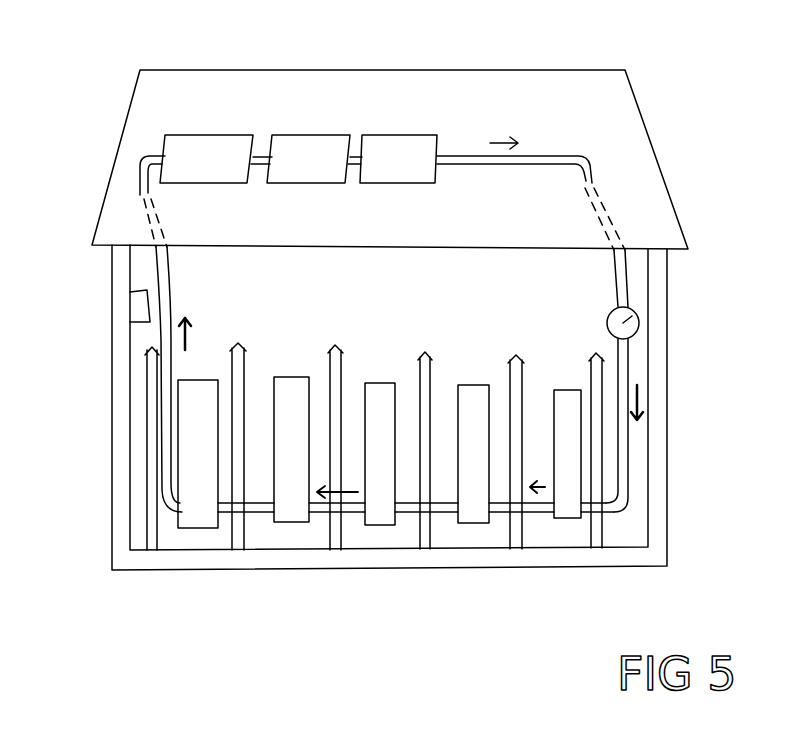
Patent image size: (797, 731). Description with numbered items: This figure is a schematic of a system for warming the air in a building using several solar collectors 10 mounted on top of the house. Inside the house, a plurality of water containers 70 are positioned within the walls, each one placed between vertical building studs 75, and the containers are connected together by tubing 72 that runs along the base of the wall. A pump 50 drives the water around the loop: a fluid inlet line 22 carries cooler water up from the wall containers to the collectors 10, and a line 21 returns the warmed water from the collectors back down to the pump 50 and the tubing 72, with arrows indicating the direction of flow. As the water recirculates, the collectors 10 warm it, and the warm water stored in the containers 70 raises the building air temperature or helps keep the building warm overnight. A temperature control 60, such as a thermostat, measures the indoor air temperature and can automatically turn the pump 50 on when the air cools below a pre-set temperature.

The collector 10 is at (307, 145).
The supply pipe 21 is at (620, 300).
The fluid inlet line 22 is at (172, 302).
The pump 50 is at (640, 316).
The temperature control 60 is at (140, 309).
The water container 70 is at (472, 380).
The tubing 72 is at (262, 513).
The vertical building stud 75 is at (324, 353).